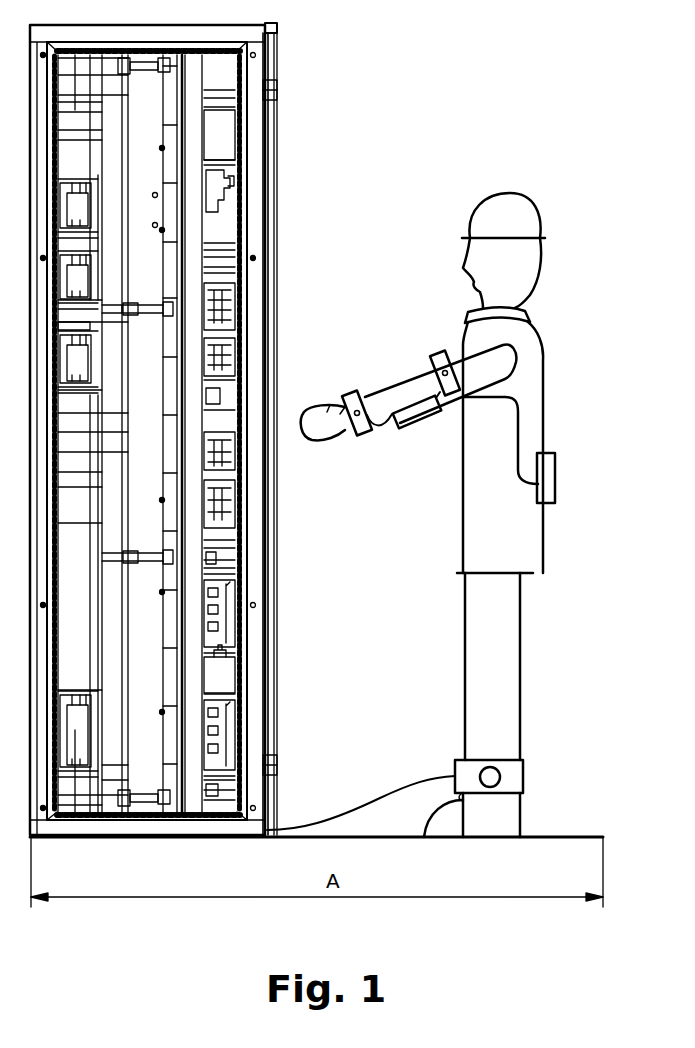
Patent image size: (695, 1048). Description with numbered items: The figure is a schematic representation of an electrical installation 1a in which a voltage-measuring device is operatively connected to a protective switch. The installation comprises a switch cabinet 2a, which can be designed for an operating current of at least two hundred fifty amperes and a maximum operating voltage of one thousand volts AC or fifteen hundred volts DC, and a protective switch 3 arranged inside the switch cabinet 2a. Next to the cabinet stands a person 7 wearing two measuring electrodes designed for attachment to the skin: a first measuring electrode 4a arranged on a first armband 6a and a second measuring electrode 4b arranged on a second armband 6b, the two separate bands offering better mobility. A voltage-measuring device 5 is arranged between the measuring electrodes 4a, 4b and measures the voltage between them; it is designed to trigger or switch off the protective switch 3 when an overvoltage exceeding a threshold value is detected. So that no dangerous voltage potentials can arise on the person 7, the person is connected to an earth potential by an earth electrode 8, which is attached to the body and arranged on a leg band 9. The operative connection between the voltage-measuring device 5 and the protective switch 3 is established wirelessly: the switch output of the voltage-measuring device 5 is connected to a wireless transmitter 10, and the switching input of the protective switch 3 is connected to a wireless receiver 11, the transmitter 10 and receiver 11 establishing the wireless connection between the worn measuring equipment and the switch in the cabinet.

The electrical installation 1a is at (470, 66).
The switch cabinet 2a is at (257, 65).
The protective switch 3 is at (225, 740).
The first measuring electrode 4a is at (352, 433).
The second measuring electrode 4b is at (435, 360).
The voltage-measuring device 5 is at (415, 418).
The first armband 6a is at (357, 400).
The second armband 6b is at (442, 367).
The person 7 is at (523, 277).
The earth electrode 8 is at (490, 777).
The leg band 9 is at (513, 773).
The wireless transmitter 10 is at (542, 475).
The wireless receiver 11 is at (222, 683).